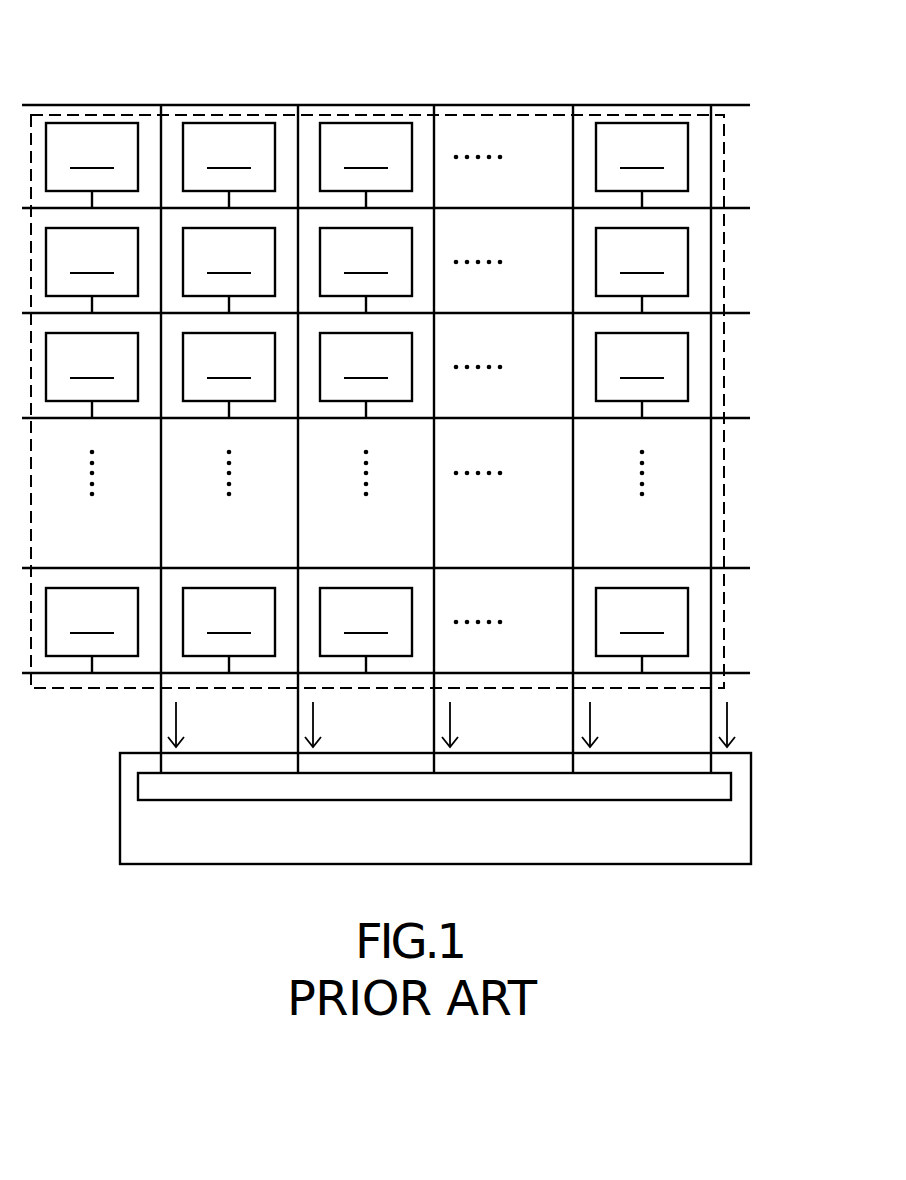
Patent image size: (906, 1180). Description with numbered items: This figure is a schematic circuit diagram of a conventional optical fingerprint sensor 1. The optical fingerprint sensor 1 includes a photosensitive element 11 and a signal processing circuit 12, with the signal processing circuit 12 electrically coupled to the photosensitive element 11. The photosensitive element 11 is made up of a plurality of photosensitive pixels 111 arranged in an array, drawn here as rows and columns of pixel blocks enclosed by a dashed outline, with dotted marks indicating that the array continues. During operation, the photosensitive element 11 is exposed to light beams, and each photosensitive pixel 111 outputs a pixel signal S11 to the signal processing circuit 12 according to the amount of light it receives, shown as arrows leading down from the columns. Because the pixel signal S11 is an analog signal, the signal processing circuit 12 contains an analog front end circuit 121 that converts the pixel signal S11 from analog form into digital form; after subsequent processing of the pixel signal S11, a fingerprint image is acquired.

The optical fingerprint sensor 1 is at (173, 31).
The photosensitive element 11 is at (631, 112).
The photosensitive pixel 111 is at (367, 398).
The signal processing circuit 12 is at (754, 826).
The analog front end circuit 121 is at (633, 787).
The pixel signal S11 is at (472, 724).